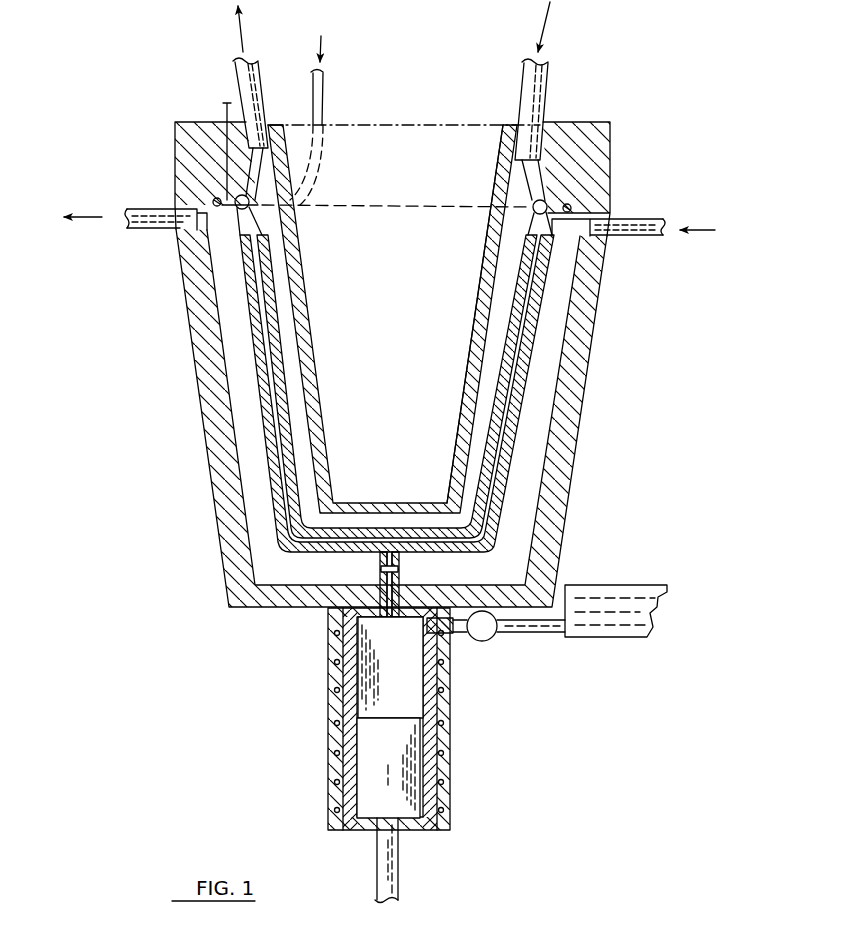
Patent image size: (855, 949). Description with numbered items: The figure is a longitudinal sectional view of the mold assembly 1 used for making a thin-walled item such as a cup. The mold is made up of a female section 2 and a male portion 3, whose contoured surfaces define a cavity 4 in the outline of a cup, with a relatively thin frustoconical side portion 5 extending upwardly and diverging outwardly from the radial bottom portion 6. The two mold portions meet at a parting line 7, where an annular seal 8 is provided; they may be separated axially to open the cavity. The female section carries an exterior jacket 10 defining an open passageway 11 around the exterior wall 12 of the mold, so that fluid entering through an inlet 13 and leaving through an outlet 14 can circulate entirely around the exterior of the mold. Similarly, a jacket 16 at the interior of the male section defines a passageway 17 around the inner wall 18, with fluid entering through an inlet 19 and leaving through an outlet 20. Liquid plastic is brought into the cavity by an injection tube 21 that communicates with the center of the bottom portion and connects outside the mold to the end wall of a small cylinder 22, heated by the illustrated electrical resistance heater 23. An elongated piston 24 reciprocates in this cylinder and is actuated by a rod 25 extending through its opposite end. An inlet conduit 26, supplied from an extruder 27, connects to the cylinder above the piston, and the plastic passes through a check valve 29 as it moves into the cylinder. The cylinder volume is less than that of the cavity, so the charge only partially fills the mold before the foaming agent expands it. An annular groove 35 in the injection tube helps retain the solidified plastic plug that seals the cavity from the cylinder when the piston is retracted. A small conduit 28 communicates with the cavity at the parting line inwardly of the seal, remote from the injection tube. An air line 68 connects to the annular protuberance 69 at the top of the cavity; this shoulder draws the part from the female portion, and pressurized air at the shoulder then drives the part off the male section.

The mold assembly 1 is at (192, 393).
The female section 2 is at (188, 329).
The male portion 3 is at (166, 133).
The cavity 4 is at (510, 428).
The frustoconical side portion 5 is at (487, 493).
The bottom portion 6 is at (340, 548).
The parting line 7 is at (598, 200).
The annular seal 8 is at (572, 200).
The exterior jacket 10 is at (218, 473).
The passageway 11 is at (252, 520).
The exterior wall 12 is at (523, 387).
The inlet 13 is at (620, 227).
The outlet 14 is at (152, 220).
The jacket 16 is at (312, 345).
The passageway 17 is at (498, 317).
The inner wall 18 is at (292, 458).
The inlet 19 is at (530, 110).
The outlet 20 is at (240, 80).
The injection tube 21 is at (392, 582).
The cylinder 22 is at (370, 688).
The electrical resistance heater 23 is at (337, 630).
The piston 24 is at (363, 763).
The rod 25 is at (390, 863).
The inlet conduit 26 is at (515, 632).
The extruder 27 is at (590, 665).
The conduit 28 is at (222, 103).
The check valve 29 is at (472, 636).
The annular groove 35 is at (380, 570).
The air line 68 is at (320, 96).
The annular protuberance 69 is at (495, 215).